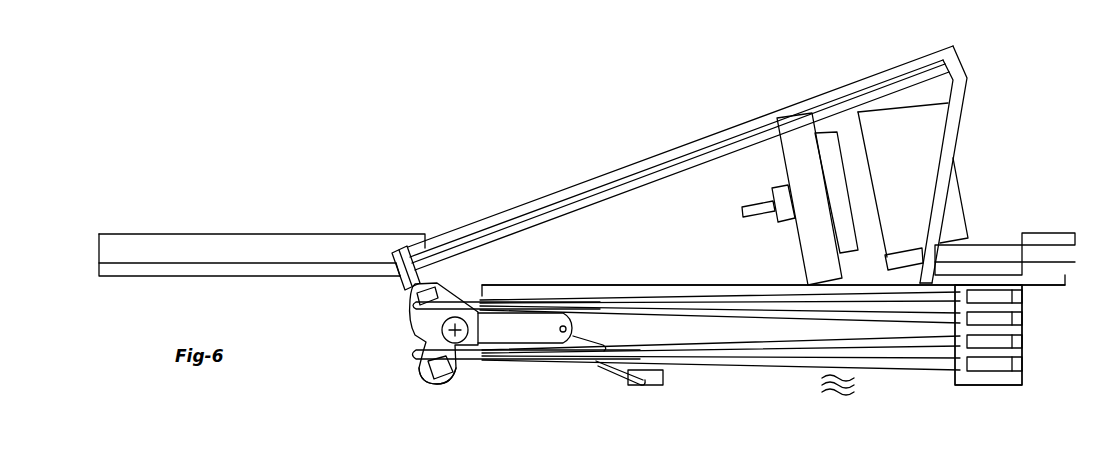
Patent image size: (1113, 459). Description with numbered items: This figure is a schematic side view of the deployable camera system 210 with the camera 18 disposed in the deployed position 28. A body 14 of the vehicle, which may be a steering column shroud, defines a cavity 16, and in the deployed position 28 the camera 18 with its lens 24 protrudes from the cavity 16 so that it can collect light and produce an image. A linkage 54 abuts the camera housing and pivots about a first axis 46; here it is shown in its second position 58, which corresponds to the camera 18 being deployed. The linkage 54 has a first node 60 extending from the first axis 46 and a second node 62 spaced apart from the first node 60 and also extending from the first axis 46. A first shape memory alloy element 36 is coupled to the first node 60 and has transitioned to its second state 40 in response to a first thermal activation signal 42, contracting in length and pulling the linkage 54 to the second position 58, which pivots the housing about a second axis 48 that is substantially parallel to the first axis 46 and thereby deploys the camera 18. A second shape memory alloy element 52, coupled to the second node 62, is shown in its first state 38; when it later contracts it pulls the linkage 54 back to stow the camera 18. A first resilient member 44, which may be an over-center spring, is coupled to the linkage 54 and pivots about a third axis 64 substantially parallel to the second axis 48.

The deployable camera system 210 is at (116, 212).
The body 14 is at (205, 250).
The cavity 16 is at (466, 445).
The camera 18 is at (903, 128).
The lens 24 is at (963, 198).
The deployed position 28 is at (1000, 108).
The first shape memory alloy element 36 is at (895, 370).
The first state 38 is at (695, 287).
The second state 40 is at (895, 370).
The first thermal activation signal 42 is at (840, 393).
The first resilient member 44 is at (606, 366).
The first axis 46 is at (455, 325).
The second axis 48 is at (406, 262).
The second shape memory alloy element 52 is at (695, 287).
The linkage 54 is at (432, 336).
The second position 58 is at (416, 386).
The first node 60 is at (415, 374).
The second node 62 is at (412, 298).
The third axis 64 is at (656, 372).